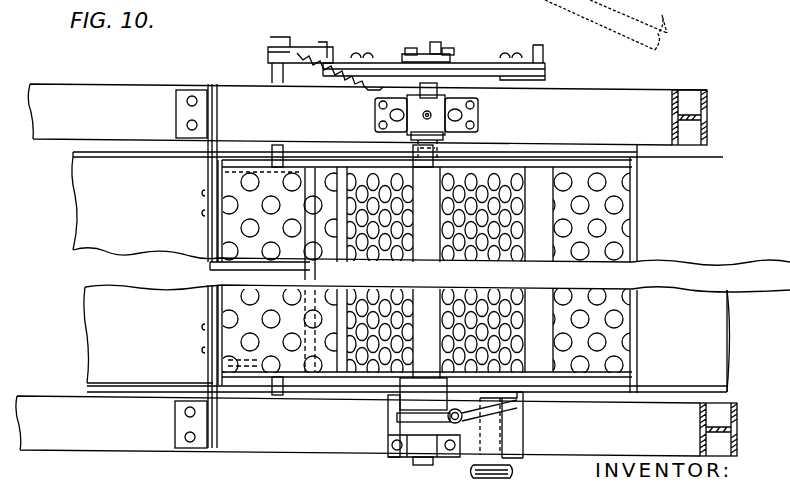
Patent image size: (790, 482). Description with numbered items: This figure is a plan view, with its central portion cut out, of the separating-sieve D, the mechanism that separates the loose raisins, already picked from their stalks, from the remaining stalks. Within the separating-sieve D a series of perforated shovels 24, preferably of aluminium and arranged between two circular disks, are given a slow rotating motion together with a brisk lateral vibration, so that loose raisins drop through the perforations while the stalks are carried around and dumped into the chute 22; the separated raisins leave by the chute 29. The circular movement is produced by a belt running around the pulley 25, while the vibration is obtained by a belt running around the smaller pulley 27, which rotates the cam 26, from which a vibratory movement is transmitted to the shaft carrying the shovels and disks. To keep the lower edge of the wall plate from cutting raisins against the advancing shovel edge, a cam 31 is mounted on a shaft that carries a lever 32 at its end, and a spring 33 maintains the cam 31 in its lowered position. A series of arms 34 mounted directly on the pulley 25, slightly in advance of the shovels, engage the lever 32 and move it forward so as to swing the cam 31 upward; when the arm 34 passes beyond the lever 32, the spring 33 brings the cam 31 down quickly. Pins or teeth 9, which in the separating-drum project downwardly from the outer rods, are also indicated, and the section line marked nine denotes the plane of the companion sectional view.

The fixed projecting pins or teeth 9 is at (185, 357).
The chute 22 is at (632, 346).
The shovels 24 is at (412, 262).
The pulley 25 is at (548, 80).
The cam 26 is at (522, 407).
The smaller pulley 27 is at (510, 473).
The chute 29 is at (121, 203).
The cam 31 is at (347, 258).
The lever 32 is at (296, 50).
The spring 33 is at (335, 70).
The arms 34 is at (328, 47).
The separating-sieve D is at (214, 69).